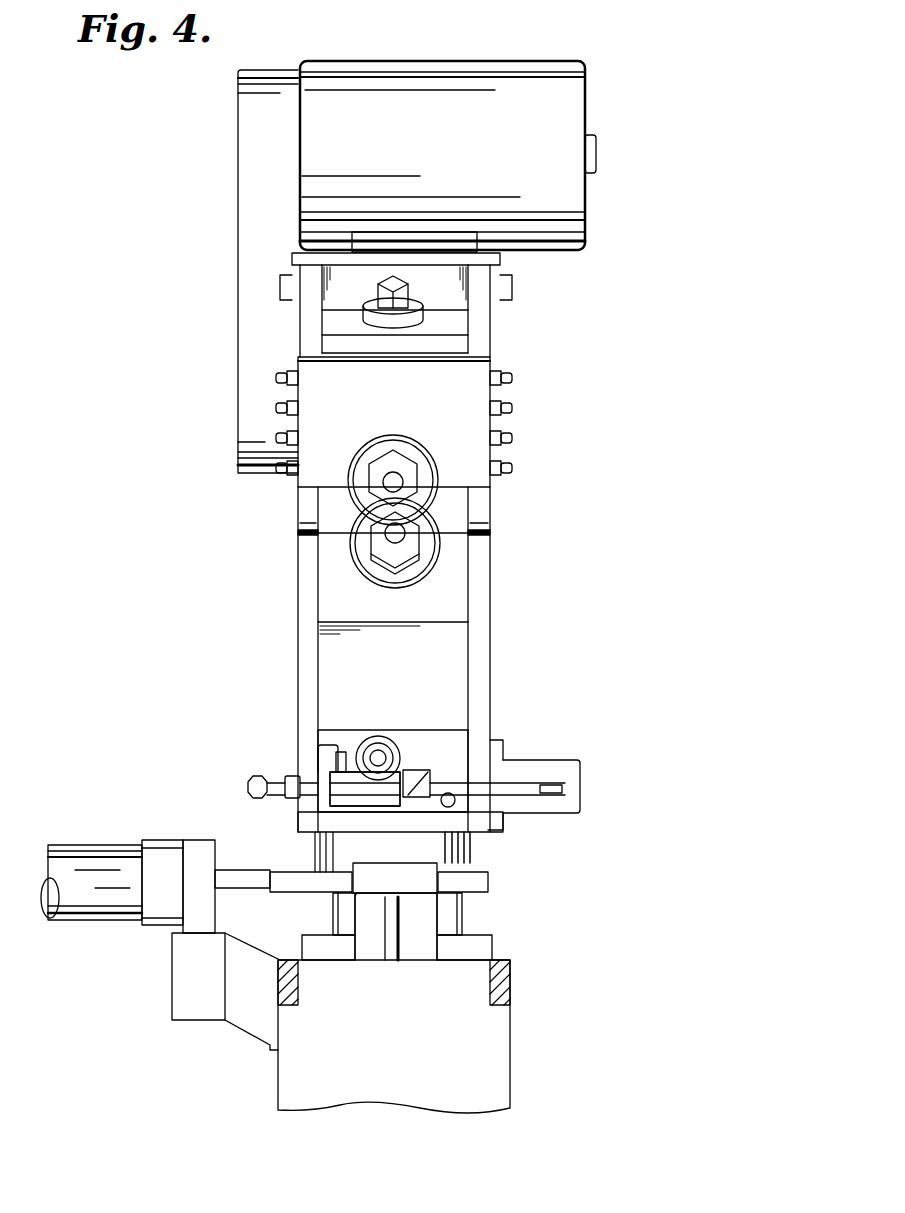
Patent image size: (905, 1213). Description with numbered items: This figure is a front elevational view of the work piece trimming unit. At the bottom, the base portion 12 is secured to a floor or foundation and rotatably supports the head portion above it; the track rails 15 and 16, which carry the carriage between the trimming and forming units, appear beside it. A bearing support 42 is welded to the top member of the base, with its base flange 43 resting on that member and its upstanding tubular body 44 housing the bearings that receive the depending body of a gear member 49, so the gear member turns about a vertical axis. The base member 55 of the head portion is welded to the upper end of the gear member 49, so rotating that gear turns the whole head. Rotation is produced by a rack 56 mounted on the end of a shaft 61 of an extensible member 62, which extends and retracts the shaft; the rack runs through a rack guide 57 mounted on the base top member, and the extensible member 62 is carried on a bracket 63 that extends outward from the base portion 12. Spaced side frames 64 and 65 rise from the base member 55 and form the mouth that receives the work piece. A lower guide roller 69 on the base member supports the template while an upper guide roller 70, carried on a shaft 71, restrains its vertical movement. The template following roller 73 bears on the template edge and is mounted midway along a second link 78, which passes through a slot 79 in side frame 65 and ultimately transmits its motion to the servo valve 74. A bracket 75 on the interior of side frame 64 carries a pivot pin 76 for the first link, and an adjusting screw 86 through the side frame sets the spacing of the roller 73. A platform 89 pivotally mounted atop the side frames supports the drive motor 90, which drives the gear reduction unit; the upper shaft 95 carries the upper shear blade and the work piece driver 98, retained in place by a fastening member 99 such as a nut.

The base portion 12 is at (510, 1050).
The rail 15 is at (490, 985).
The rail 16 is at (290, 1005).
The bearing support 42 is at (462, 932).
The base flange 43 is at (492, 948).
The tubular body 44 is at (462, 910).
The gear member 49 is at (478, 855).
The base member 55 is at (345, 845).
The rack 56 is at (490, 882).
The rack guide 57 is at (372, 935).
The shaft 61 is at (233, 890).
The extensible member 62 is at (70, 845).
The bracket 63 is at (172, 1020).
The side frame 64 is at (298, 665).
The side frame 65 is at (490, 573).
The lower guide roller 69 is at (452, 780).
The upper guide roller 70 is at (378, 735).
The shaft 71 is at (355, 750).
The roller 73 is at (428, 770).
The servo valve 74 is at (560, 760).
The bracket 75 is at (330, 750).
The pivot pin 76 is at (338, 752).
The second link 78 is at (362, 790).
The slot 79 is at (498, 785).
The adjusting screw 86 is at (250, 786).
The platform 89 is at (503, 256).
The drive motor 90 is at (483, 61).
The upper shaft 95 is at (402, 484).
The work piece driver 98 is at (383, 447).
The fastening member 99 is at (398, 462).